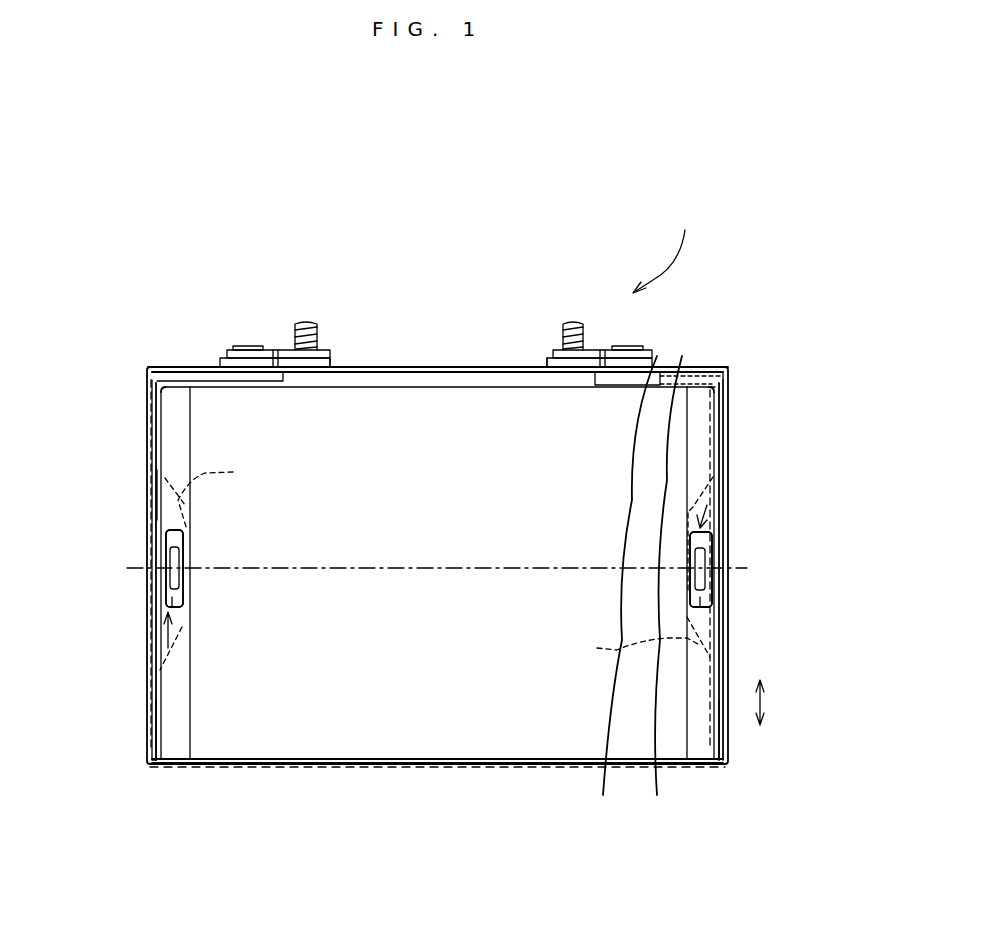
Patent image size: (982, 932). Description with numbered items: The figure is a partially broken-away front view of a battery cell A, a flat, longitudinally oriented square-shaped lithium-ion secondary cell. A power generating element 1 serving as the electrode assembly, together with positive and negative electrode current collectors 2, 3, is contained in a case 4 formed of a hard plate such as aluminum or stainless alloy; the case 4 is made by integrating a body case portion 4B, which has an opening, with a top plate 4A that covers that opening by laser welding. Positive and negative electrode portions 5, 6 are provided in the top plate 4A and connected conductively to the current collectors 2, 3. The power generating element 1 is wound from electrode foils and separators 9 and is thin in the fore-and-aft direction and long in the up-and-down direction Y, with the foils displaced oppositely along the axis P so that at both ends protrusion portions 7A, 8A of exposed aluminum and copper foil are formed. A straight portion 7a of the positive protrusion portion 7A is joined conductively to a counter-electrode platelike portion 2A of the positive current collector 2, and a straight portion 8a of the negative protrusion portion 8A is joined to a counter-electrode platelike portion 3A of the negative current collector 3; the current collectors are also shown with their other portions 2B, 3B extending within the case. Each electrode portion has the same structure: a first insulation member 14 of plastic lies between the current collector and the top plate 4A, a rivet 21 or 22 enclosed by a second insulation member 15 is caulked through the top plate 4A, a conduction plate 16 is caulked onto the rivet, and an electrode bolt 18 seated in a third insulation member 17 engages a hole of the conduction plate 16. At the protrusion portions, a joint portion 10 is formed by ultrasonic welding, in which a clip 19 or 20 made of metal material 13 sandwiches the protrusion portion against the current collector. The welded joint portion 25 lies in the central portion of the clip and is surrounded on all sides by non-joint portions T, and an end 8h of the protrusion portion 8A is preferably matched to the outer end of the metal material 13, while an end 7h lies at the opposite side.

The power generating element 1 is at (383, 752).
The positive electrode current collector 2 is at (150, 608).
The counter-electrode platelike portion 2A is at (217, 495).
The end wall of first case member 2B is at (167, 437).
The negative electrode current collector 3 is at (727, 528).
The counter-electrode platelike portion 3A is at (632, 650).
The end wall of second case member 3B is at (728, 398).
The case 4 is at (632, 768).
The top plate 4A is at (447, 365).
The body case portion 4B is at (142, 740).
The positive electrode portion 5 is at (317, 323).
The negative electrode portion 6 is at (551, 328).
The positive electrode protrusion portion 7A is at (177, 408).
The straight portion 7a is at (167, 510).
The lower portion of first insulating sheet 7h is at (157, 727).
The negative electrode protrusion portion 8A is at (703, 440).
The straight portion 8a is at (707, 617).
The end of the protrusion portion 8h is at (723, 747).
The separator 9 is at (277, 747).
The joint portion 10 is at (157, 657).
The metal material 13 is at (439, 568).
The first insulation member 14 is at (268, 381).
The second insulation member 15 is at (220, 363).
The conduction plate 16 is at (240, 350).
The third insulation member 17 is at (333, 363).
The electrode bolt 18 is at (277, 350).
The clip 19 is at (170, 540).
The clip 20 is at (700, 608).
The rivet 21 is at (235, 346).
The rivet 22 is at (637, 348).
The joint portion 25 is at (175, 587).
The battery cell A is at (662, 251).
The axis P is at (380, 570).
The non-joint portions T is at (177, 597).
The up-and-down direction Y is at (762, 703).